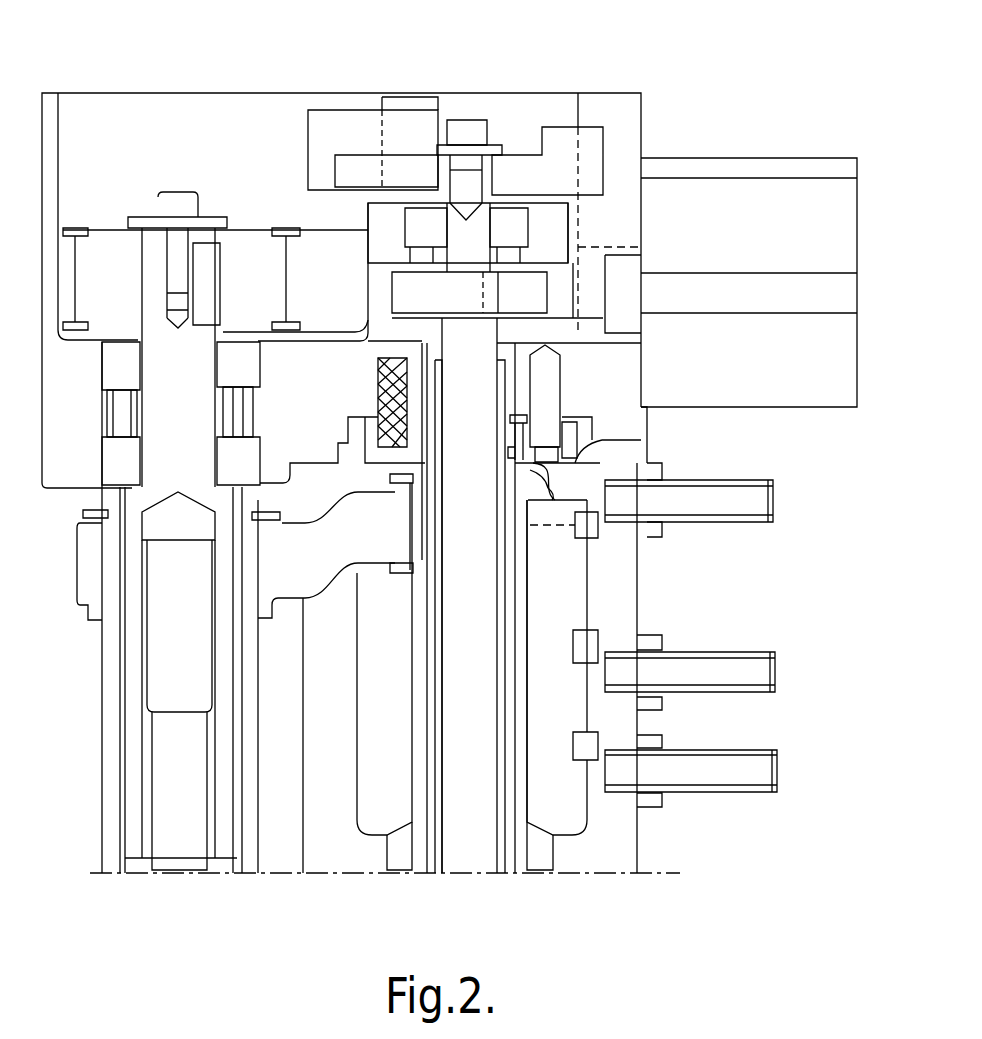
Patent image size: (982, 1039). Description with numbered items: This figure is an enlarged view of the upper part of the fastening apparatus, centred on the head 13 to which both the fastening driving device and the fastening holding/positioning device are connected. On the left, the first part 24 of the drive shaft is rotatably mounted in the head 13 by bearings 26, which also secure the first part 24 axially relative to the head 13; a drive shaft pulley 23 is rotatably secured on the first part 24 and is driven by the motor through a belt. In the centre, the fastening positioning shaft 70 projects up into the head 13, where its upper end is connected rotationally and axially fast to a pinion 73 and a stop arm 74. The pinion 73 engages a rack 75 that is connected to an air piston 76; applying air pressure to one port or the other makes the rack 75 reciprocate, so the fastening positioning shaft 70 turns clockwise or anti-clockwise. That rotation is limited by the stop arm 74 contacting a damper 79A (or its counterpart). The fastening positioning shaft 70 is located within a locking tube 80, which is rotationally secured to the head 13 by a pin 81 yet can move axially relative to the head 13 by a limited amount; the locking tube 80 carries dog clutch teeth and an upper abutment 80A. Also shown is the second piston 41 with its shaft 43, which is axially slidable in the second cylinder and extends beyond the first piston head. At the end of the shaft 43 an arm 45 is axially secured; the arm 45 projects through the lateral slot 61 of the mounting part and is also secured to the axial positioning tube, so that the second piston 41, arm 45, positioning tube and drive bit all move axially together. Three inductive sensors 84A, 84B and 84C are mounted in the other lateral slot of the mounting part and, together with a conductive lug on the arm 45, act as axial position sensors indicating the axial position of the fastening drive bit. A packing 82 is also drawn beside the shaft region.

The head 13 is at (641, 93).
The damper 79A is at (342, 125).
The stop arm 74 is at (560, 140).
The air piston 76 is at (762, 188).
The pinion 73 is at (390, 287).
The rack 75 is at (565, 290).
The drive shaft pulley 23 is at (124, 301).
The first part 24 is at (193, 446).
The bearings 26 is at (107, 460).
The arm 45 is at (313, 576).
The packing 82 is at (380, 390).
The pin 81 is at (547, 387).
The upper abutment 80A is at (600, 447).
The locking tube 80 is at (513, 875).
The second piston 41 is at (522, 637).
The shaft 43 is at (523, 608).
The inductive sensor 84A is at (770, 524).
The inductive sensor 84B is at (755, 650).
The inductive sensor 84C is at (745, 750).
The lateral slot 61 is at (315, 716).
The fastening positioning shaft 70 is at (483, 875).